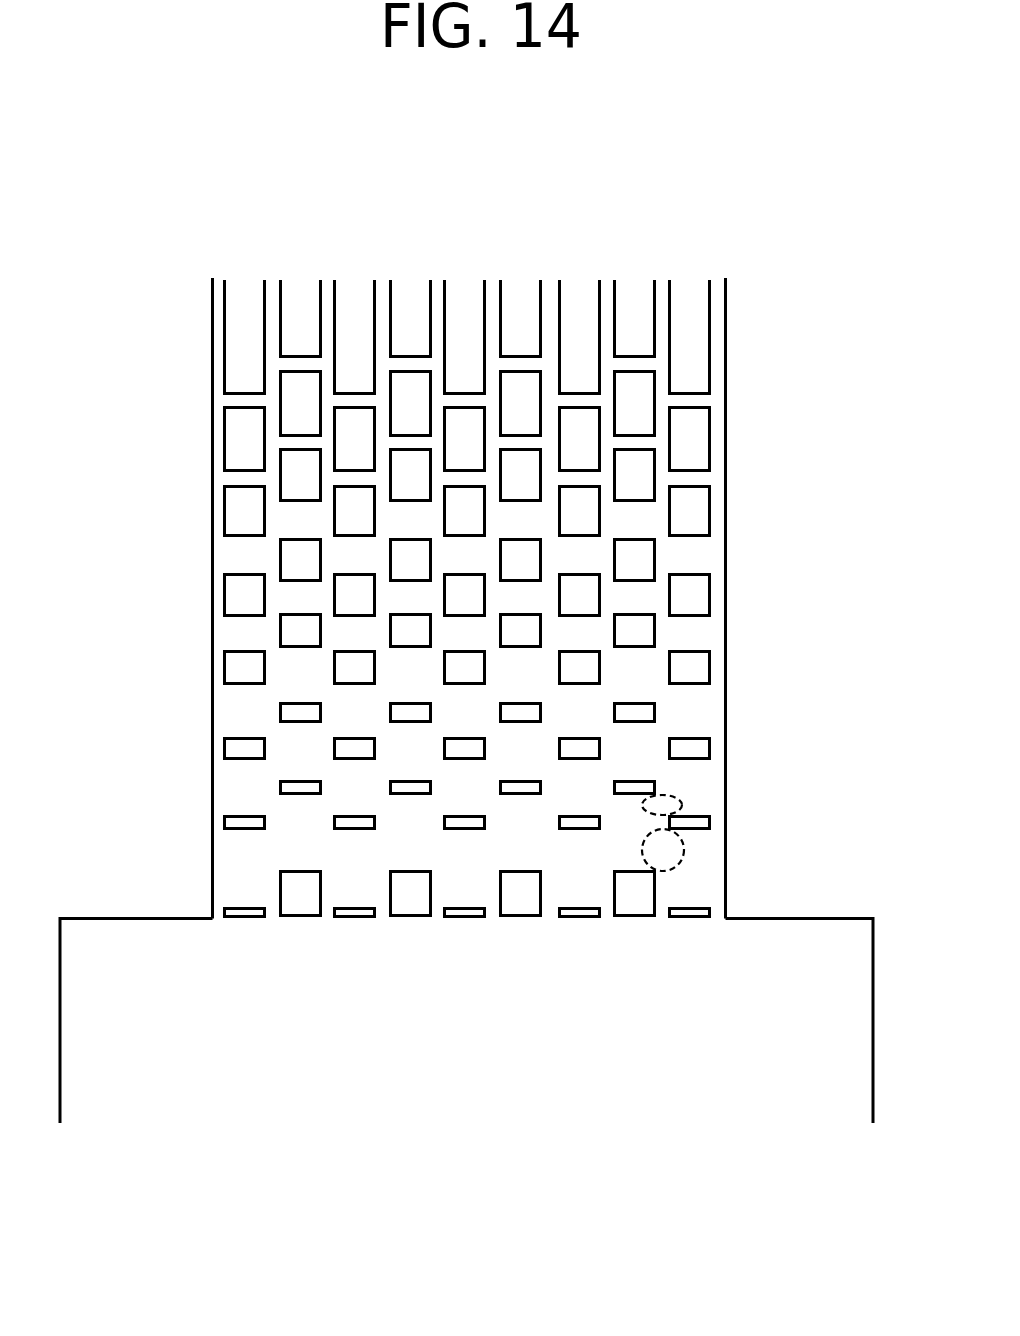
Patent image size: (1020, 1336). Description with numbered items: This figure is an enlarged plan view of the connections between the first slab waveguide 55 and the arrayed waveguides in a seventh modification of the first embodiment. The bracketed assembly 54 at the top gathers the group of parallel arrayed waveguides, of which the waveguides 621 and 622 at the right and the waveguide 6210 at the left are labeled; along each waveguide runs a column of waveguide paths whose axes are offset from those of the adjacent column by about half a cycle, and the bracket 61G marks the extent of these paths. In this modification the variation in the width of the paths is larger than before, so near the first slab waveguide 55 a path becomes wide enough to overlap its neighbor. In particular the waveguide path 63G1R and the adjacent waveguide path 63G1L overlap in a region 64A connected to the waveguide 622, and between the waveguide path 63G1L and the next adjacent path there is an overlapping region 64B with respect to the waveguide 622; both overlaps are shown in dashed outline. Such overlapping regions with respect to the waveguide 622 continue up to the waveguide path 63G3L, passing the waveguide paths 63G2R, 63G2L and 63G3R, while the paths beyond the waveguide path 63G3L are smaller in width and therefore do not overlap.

The display electrode structure 54 is at (737, 262).
The first slab waveguide 55 is at (135, 927).
The green electrode region 61G is at (182, 357).
The electrode line 6210 is at (212, 302).
The waveguide 622 is at (670, 325).
The electrode line 621 is at (726, 360).
The waveguide path 63G3L is at (643, 665).
The left gap 2 63G2L is at (630, 762).
The waveguide path 63G1L is at (627, 855).
The right gap 3 63G3R is at (695, 727).
The right gap 2 63G2R is at (693, 780).
The waveguide path 63G1R is at (685, 900).
The region 64A is at (683, 855).
The overlapping region 64B is at (682, 797).